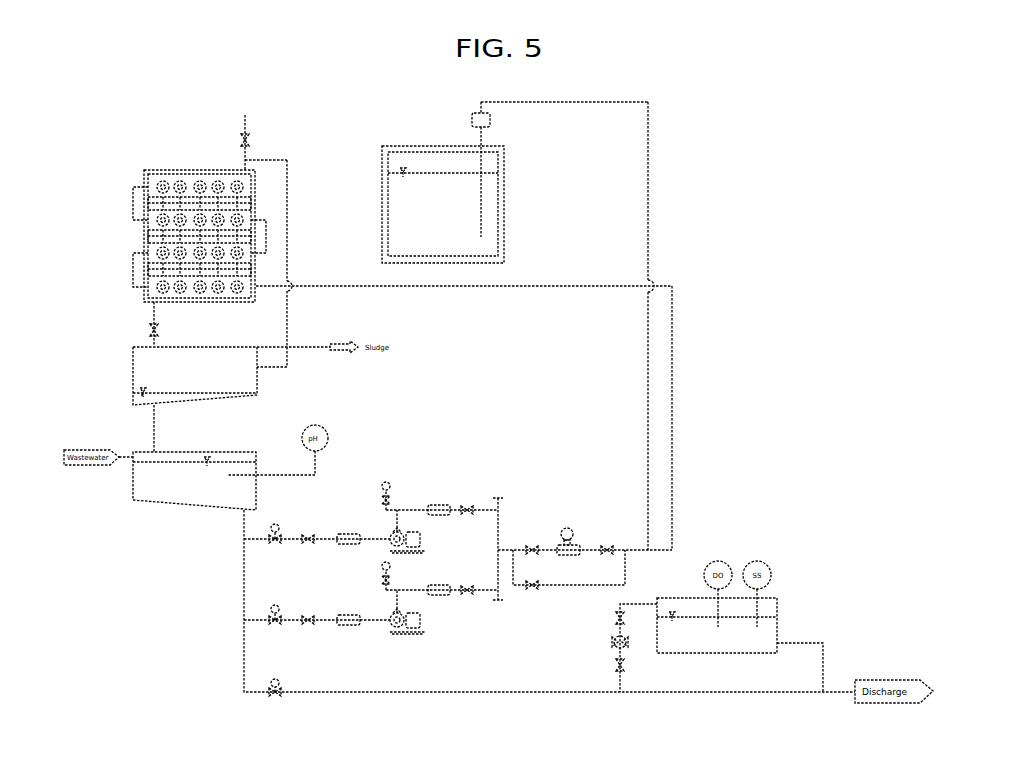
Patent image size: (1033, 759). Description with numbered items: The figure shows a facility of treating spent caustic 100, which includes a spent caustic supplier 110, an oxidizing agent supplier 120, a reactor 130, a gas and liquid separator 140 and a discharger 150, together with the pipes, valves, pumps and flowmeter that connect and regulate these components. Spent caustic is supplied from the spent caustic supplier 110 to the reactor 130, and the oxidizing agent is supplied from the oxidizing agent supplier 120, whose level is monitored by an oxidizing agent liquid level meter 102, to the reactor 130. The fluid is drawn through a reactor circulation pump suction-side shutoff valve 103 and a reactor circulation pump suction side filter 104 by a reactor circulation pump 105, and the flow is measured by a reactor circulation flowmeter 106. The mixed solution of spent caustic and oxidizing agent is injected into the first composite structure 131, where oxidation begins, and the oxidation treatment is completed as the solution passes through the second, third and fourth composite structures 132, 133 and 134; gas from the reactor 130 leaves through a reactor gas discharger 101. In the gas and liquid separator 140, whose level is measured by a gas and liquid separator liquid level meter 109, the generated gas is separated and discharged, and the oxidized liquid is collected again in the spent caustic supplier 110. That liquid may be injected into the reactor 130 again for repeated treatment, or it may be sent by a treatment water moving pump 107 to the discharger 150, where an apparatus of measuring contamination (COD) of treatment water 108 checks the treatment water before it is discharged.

The facility of treating spent caustic 100 is at (114, 138).
The reactor gas discharger 101 is at (252, 139).
The oxidizing agent liquid level meter 102 is at (492, 120).
The reactor circulation pump suction-side shutoff valve 103 is at (276, 547).
The reactor circulation pump suction side filter 104 is at (348, 546).
The reactor circulation pump 105 is at (427, 542).
The reactor circulation flowmeter 106 is at (573, 530).
The treatment water moving pump 107 is at (612, 643).
The apparatus of measuring contamination (COD) of treatment water 108 is at (722, 561).
The gas and liquid separator liquid level meter 109 is at (145, 392).
The spent caustic supplier 110 is at (133, 500).
The oxidizing agent supplier 120 is at (505, 202).
The reactor 130 is at (199, 239).
The first composite structure 131 is at (155, 290).
The second composite structure 132 is at (250, 256).
The third composite structure 133 is at (146, 229).
The fourth composite structure 134 is at (190, 172).
The gas and liquid separator 140 is at (258, 384).
The discharger 150 is at (779, 606).